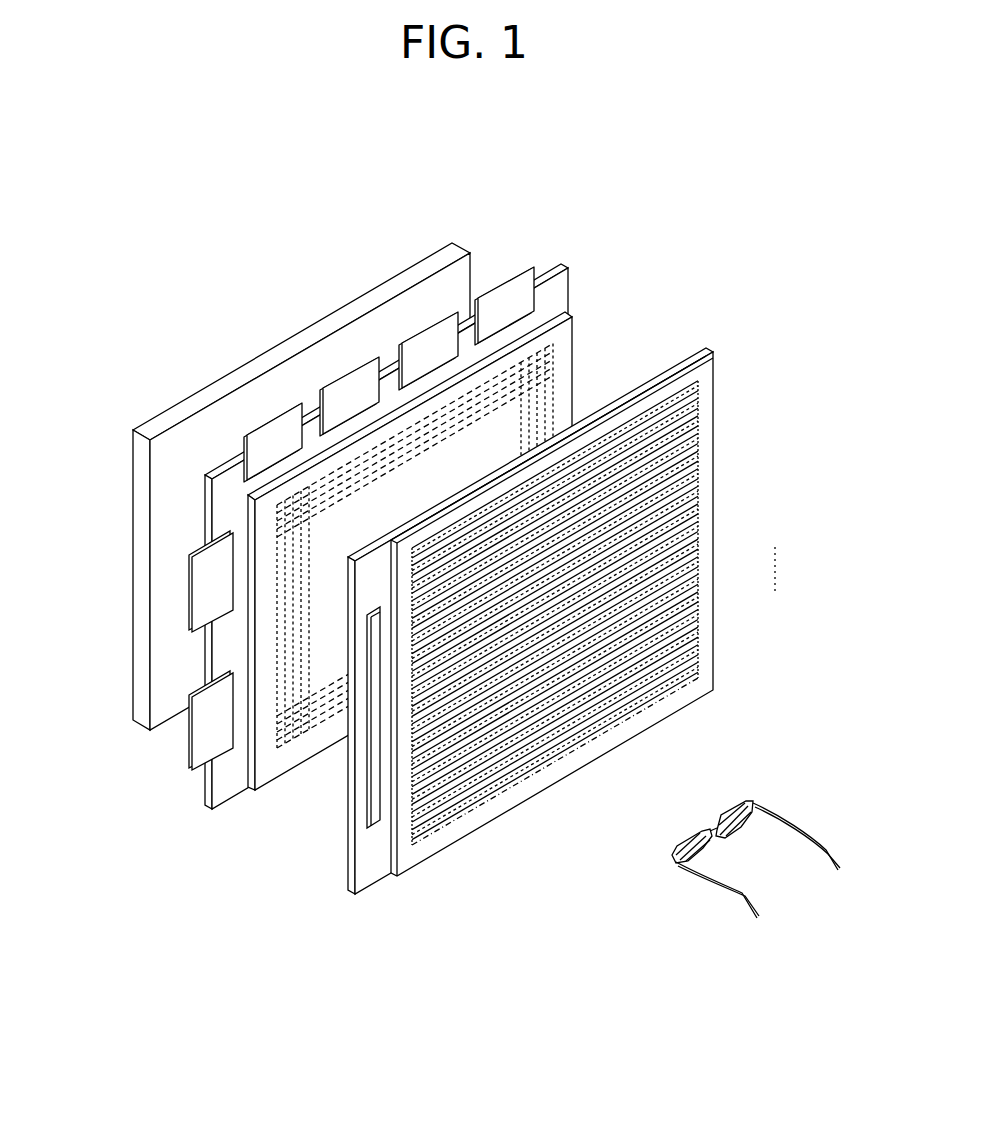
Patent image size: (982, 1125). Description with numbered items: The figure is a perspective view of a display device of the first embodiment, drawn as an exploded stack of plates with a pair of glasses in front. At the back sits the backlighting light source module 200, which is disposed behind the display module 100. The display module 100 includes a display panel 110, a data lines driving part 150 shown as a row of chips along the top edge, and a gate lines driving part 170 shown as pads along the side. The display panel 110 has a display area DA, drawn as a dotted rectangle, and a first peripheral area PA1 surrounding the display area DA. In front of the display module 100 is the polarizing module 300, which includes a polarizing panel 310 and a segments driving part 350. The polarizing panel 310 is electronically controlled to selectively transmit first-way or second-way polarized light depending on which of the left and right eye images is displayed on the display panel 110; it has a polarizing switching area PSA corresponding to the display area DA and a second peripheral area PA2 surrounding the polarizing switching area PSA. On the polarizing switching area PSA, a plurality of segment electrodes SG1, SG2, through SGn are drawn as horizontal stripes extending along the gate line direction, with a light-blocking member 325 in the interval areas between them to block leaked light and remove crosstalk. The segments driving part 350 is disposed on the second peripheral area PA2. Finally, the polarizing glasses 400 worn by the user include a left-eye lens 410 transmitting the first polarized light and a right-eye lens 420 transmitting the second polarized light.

The display module 100 is at (348, 585).
The display panel 110 is at (570, 291).
The data lines driving part 150 is at (523, 280).
The gate lines driving part 170 is at (190, 749).
The backlighting light source module 200 is at (130, 727).
The polarizing module 300 is at (529, 631).
The polarizing panel 310 is at (717, 380).
The light-blocking member 325 is at (697, 485).
The segments driving part 350 is at (371, 803).
The polarizing glasses 400 is at (742, 839).
The left-eye lens 410 is at (681, 843).
The right-eye lens 420 is at (724, 812).
The display area DA is at (420, 509).
The first peripheral area PA1 is at (217, 653).
The second peripheral area PA2 is at (360, 794).
The polarizing switching area PSA is at (477, 690).
The first segment electrode SG1 is at (698, 392).
The second segment electrode SG2 is at (695, 414).
The n-th segment electrode SGn is at (696, 686).